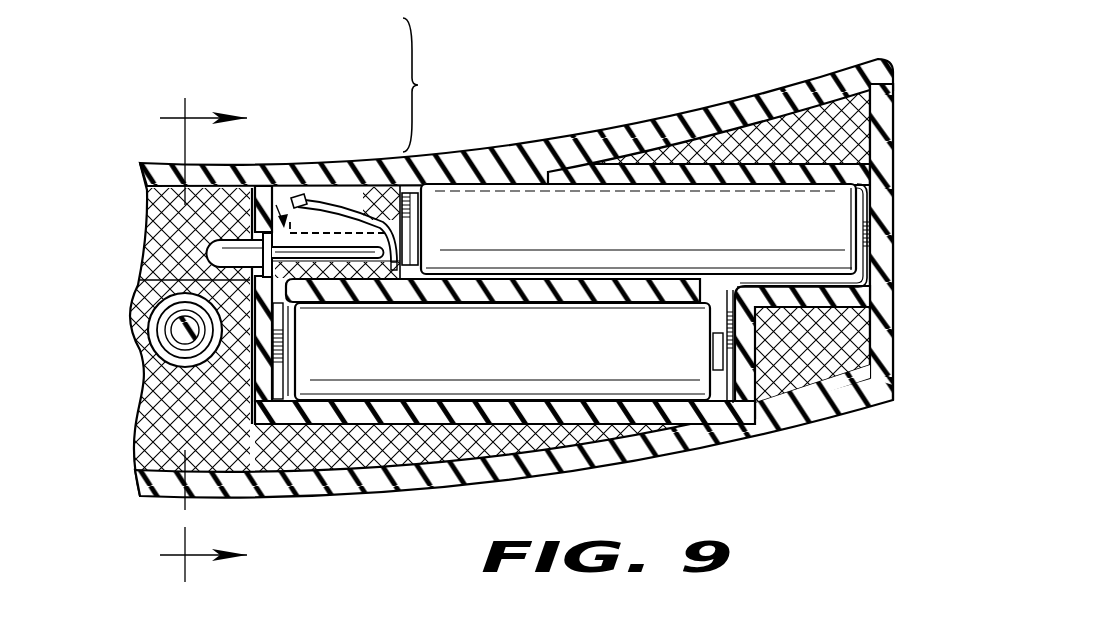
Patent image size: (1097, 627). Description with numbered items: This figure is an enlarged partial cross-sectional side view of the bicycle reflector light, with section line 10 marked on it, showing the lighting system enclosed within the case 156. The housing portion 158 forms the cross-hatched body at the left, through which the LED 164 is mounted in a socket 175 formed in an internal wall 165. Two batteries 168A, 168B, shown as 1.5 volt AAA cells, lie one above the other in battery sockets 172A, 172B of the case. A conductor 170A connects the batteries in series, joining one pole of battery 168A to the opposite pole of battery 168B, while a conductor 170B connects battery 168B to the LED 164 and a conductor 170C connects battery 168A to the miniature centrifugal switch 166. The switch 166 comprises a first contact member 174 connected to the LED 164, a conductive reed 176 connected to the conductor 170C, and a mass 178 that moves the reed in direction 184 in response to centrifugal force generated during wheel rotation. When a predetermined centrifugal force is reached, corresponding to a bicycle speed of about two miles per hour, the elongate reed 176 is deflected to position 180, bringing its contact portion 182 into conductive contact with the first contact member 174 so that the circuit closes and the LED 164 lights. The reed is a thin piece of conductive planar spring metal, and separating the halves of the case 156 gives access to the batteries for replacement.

The section line 10- 10 is at (158, 341).
The case 156 is at (771, 93).
The housing base portion 158 is at (147, 364).
The LED 164 is at (207, 251).
The internal wall 165 is at (255, 383).
The centrifugal switch 166 is at (418, 148).
The battery 168A is at (728, 240).
The battery 168B is at (624, 362).
The conductor 170A is at (870, 219).
The conductor 170B is at (140, 280).
The conductor 170C is at (406, 207).
The battery socket 172A is at (820, 178).
The battery socket 172B is at (688, 418).
The first contact member 174 is at (296, 197).
The socket 175 is at (267, 198).
The reed 176 is at (340, 300).
The mass 178 is at (328, 232).
The position 180 is at (340, 282).
The contact portion 182 is at (325, 285).
The direction 184 is at (279, 214).